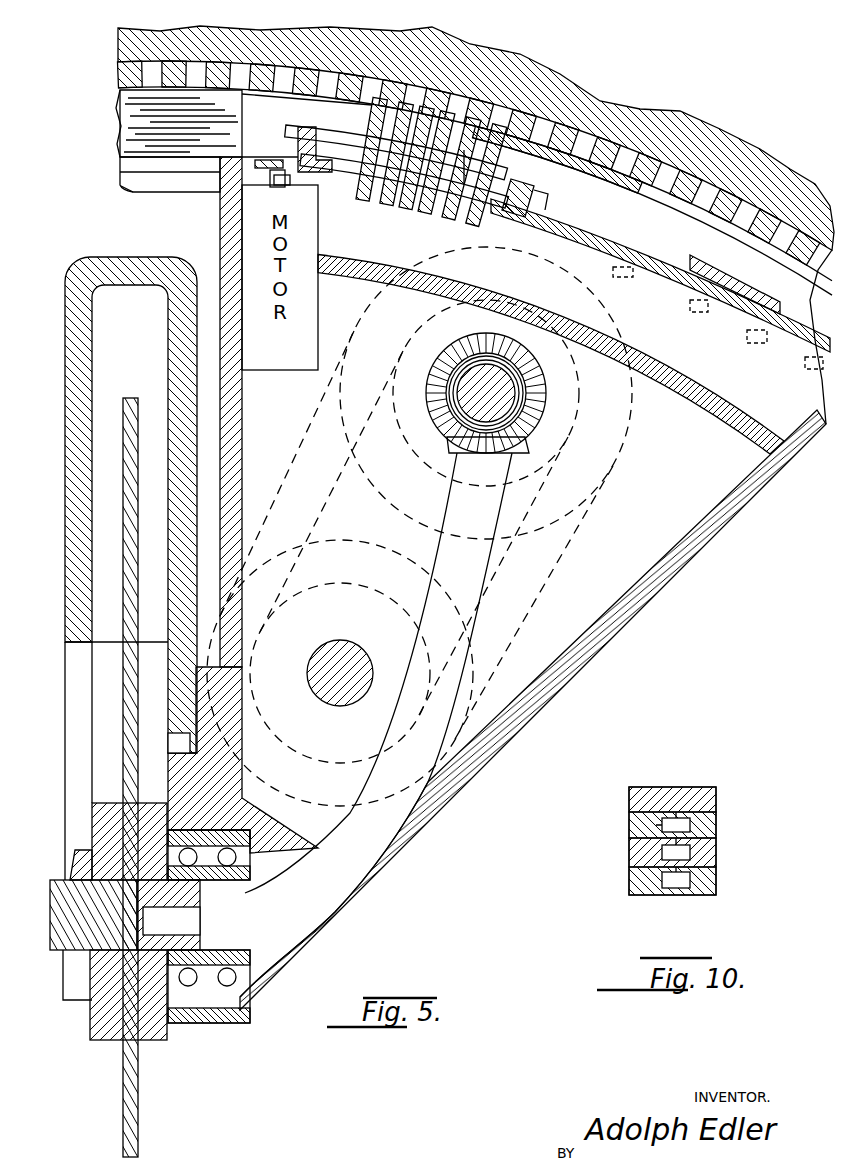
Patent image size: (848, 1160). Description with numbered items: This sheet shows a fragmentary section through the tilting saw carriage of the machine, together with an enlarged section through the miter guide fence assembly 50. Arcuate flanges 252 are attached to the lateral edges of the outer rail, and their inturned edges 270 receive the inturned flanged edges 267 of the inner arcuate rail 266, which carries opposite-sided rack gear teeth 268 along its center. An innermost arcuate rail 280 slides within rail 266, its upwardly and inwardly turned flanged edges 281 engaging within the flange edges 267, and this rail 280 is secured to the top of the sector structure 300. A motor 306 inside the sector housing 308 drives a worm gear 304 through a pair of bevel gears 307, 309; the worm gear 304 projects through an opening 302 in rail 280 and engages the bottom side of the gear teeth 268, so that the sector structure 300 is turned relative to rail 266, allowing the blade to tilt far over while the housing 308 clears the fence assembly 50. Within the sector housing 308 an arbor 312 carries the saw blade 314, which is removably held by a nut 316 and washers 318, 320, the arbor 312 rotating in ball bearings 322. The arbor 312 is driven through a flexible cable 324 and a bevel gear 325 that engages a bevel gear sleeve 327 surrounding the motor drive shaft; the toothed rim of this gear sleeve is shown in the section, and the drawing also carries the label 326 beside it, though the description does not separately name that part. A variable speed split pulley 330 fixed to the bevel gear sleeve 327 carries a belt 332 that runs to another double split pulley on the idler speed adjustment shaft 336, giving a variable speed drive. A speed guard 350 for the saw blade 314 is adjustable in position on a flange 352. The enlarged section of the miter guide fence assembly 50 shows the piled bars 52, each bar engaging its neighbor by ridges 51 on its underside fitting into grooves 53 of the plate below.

In FIG. 5, the arcuate flanges 252 is at (654, 133).
In FIG. 5, the inner arcuate rail 266 is at (591, 153).
In FIG. 5, the flanged edges 281 is at (671, 217).
In FIG. 5, the innermost arcuate rail 280 is at (734, 293).
In FIG. 5, the worm gear 304 is at (440, 108).
In FIG. 5, the bevel gear 307 is at (240, 128).
In FIG. 5, the gear teeth 268 is at (318, 125).
In FIG. 5, the opening 302 is at (547, 213).
In FIG. 5, the bevel gear 309 is at (242, 146).
In FIG. 5, the inturned flanged edges 267 is at (123, 167).
In FIG. 5, the inturned edges 270 is at (138, 190).
In FIG. 5, the motor 306 is at (255, 220).
In FIG. 5, the speed guard 350 is at (80, 594).
In FIG. 5, the flange 352 is at (92, 748).
In FIG. 5, the saw blade 314 is at (125, 1087).
In FIG. 5, the washer 318 is at (92, 812).
In FIG. 5, the nut 316 is at (73, 858).
In FIG. 5, the ball bearings 322 is at (247, 1002).
In FIG. 5, the arbor 312 is at (57, 928).
In FIG. 5, the washer 320 is at (152, 1023).
In FIG. 5, the sector housing 308 is at (624, 615).
In FIG. 5, the sector structure 300 is at (743, 543).
In FIG. 5, the variable speed split pulley 330 is at (622, 440).
In FIG. 5, the flexible cable 324 is at (365, 585).
In FIG. 5, the belt 332 is at (535, 575).
In FIG. 5, the toothed pulley rim 326 is at (470, 400).
In FIG. 5, the bevel gear sleeve 327 is at (547, 398).
In FIG. 5, the bevel gear 325 is at (517, 452).
In FIG. 5, the idler speed adjustment shaft 336 is at (347, 682).
In FIG. 10, the miter guide fence assembly 50 is at (622, 868).
In FIG. 10, the bars 52 is at (640, 826).
In FIG. 10, the grooves 53 is at (668, 893).
In FIG. 10, the ridges 51 is at (702, 895).